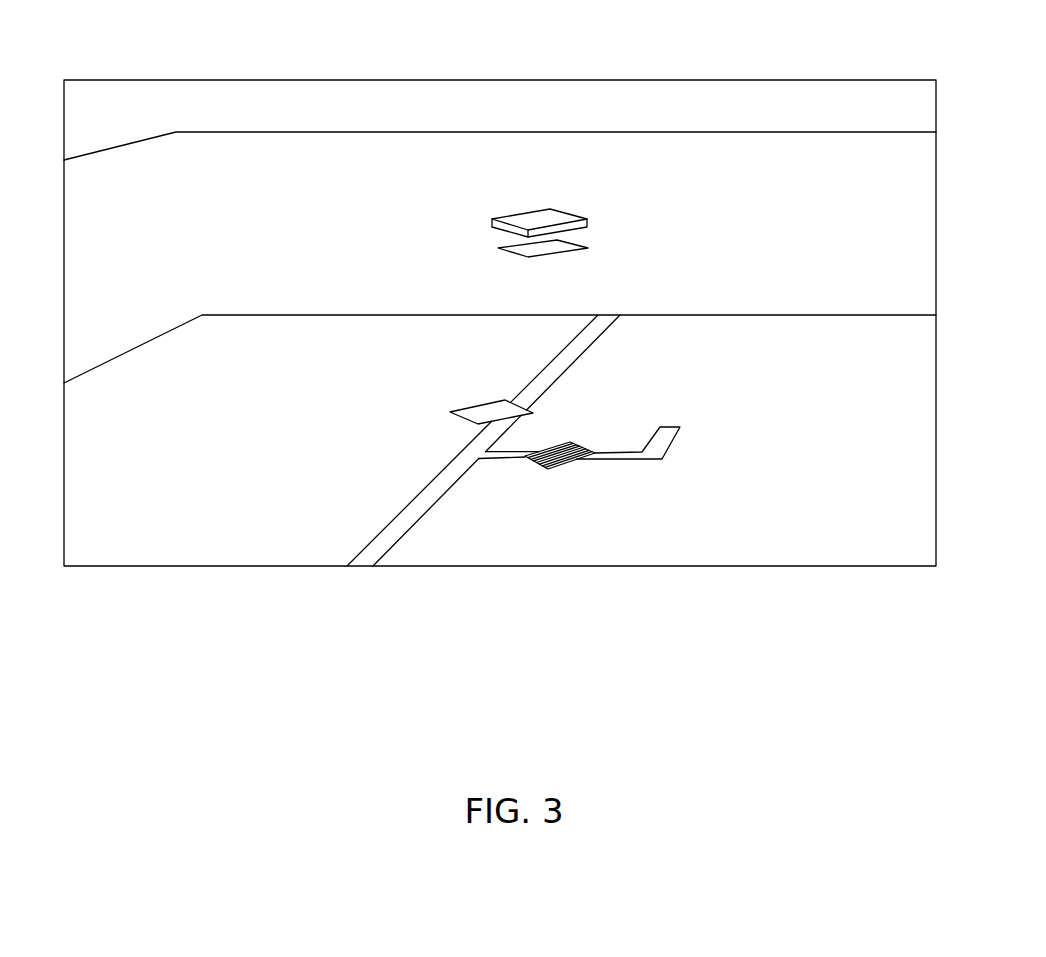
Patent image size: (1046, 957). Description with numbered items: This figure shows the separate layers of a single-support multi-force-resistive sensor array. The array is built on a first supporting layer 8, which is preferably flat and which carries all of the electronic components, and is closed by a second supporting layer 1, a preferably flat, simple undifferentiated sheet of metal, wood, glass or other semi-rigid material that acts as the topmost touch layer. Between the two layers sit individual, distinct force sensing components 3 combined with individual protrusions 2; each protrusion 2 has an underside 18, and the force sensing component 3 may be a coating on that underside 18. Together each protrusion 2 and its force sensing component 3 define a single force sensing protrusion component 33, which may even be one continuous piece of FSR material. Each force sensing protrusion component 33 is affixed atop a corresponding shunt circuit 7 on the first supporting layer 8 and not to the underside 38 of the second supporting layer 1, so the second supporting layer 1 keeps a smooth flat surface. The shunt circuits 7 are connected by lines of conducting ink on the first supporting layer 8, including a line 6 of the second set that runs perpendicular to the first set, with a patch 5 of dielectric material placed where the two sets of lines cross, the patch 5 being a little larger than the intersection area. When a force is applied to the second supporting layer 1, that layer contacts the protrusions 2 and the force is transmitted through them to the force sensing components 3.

The second supporting layer 1 is at (176, 132).
The protrusion 2 is at (540, 215).
The force sensing component 3 is at (503, 248).
The patch of dielectric material 5 is at (472, 408).
The line of the second set of lines of conducting ink 6 is at (395, 533).
The shunt circuit 7 is at (548, 469).
The first supporting layer 8 is at (723, 497).
The underside of protrusion 18 is at (587, 229).
The force sensing protrusion component 33 is at (605, 198).
The underside of second supporting layer 38 is at (232, 132).